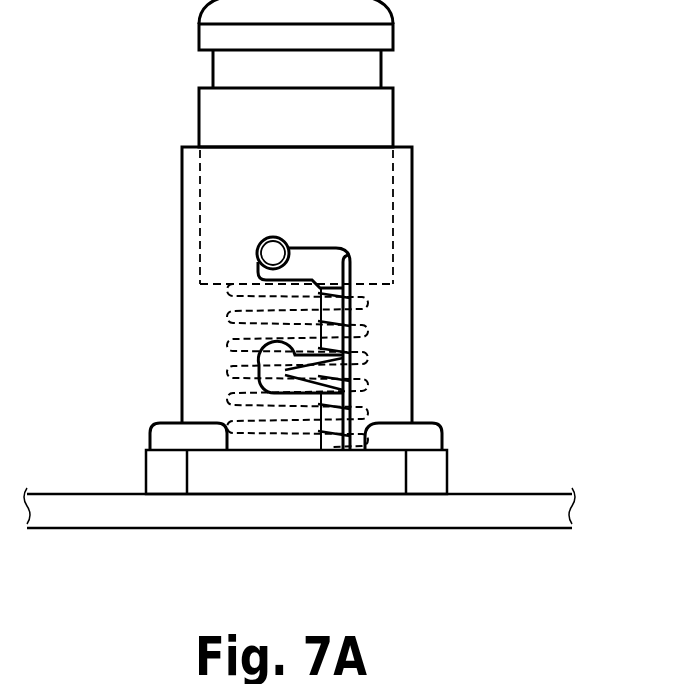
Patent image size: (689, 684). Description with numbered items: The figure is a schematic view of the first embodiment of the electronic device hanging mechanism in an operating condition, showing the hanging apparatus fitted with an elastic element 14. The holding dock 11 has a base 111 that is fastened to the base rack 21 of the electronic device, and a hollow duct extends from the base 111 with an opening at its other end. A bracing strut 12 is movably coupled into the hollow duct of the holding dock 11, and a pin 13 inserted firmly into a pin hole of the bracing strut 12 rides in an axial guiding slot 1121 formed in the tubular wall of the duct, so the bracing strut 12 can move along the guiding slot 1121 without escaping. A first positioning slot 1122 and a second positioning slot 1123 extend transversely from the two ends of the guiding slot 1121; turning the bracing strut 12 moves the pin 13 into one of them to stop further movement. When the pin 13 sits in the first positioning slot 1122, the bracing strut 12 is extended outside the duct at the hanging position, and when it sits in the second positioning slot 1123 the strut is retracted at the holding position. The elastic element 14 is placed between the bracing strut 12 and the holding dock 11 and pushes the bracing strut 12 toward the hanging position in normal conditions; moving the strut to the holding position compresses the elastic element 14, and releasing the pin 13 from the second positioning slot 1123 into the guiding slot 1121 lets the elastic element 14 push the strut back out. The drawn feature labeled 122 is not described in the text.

The holding dock 11 is at (426, 311).
The base 111 is at (435, 472).
The guiding slot 1121 is at (345, 362).
The first positioning slot 1122 is at (262, 274).
The second positioning slot 1123 is at (258, 360).
The bracing strut 12 is at (190, 112).
The neck portion of button 122 is at (219, 68).
The pin 13 is at (268, 246).
The elastic element 14 is at (226, 400).
The base rack 21 is at (477, 517).